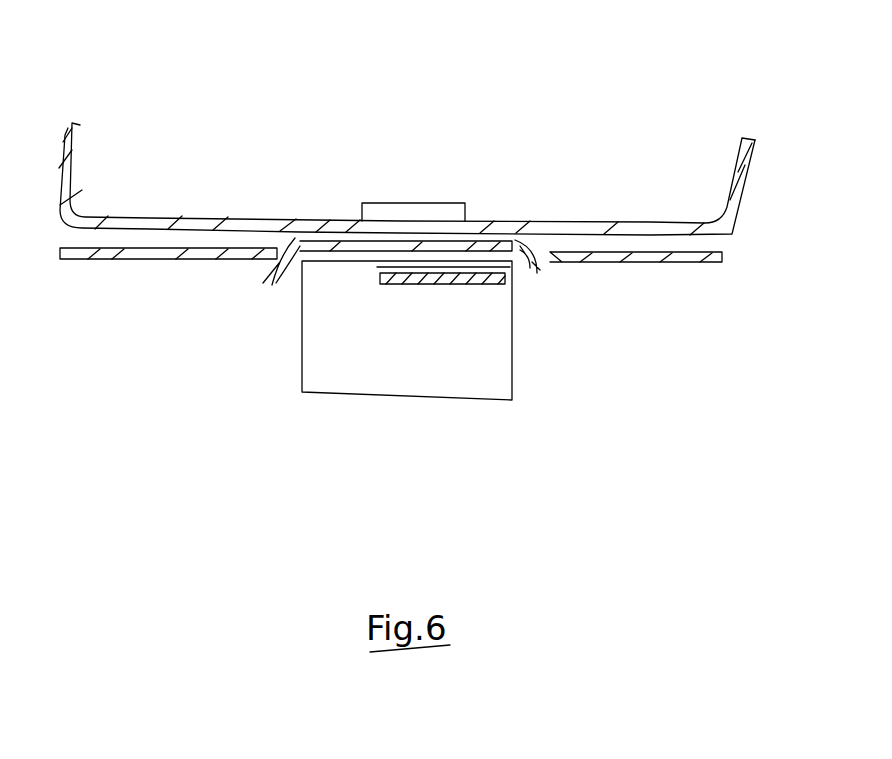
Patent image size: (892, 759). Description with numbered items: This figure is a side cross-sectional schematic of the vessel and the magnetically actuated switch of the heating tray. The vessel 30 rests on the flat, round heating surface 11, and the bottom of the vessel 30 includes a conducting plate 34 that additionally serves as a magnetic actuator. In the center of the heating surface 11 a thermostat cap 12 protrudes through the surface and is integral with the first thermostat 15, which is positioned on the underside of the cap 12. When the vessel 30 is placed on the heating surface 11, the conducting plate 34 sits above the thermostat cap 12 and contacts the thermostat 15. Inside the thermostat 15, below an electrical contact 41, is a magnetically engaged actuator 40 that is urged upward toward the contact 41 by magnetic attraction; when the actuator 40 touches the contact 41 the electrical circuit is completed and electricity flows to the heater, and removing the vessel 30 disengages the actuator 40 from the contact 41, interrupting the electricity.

The vessel 30 is at (657, 235).
The conducting plate 34 is at (440, 212).
The thermostat cap 12 is at (293, 240).
The heating surface 11 is at (105, 257).
The first thermostat 15 is at (295, 342).
The electrical contact 41 is at (377, 268).
The magnetically engaged actuator 40 is at (453, 285).